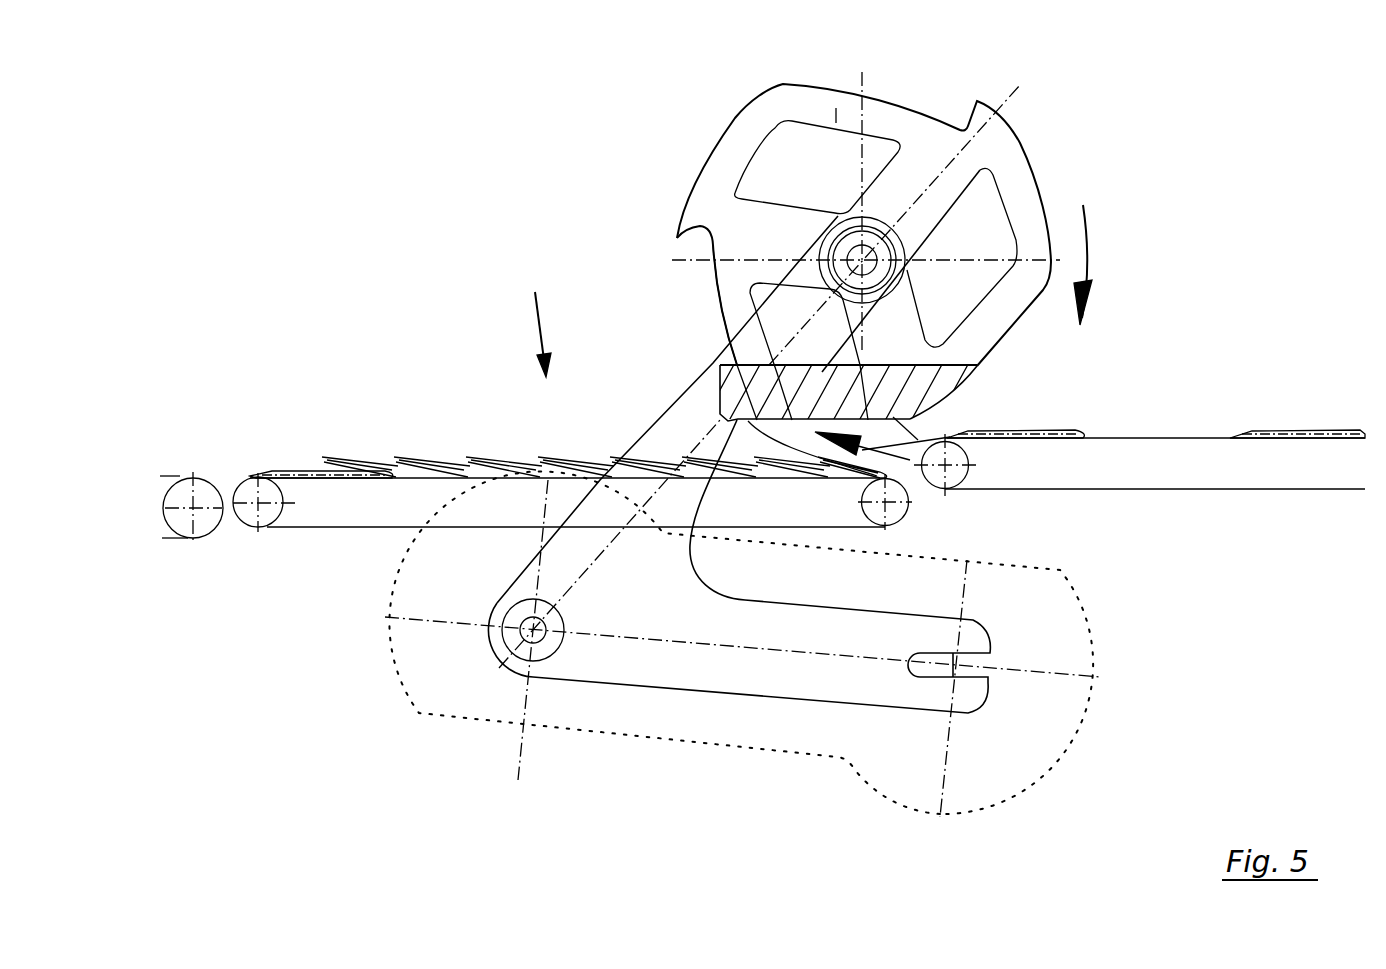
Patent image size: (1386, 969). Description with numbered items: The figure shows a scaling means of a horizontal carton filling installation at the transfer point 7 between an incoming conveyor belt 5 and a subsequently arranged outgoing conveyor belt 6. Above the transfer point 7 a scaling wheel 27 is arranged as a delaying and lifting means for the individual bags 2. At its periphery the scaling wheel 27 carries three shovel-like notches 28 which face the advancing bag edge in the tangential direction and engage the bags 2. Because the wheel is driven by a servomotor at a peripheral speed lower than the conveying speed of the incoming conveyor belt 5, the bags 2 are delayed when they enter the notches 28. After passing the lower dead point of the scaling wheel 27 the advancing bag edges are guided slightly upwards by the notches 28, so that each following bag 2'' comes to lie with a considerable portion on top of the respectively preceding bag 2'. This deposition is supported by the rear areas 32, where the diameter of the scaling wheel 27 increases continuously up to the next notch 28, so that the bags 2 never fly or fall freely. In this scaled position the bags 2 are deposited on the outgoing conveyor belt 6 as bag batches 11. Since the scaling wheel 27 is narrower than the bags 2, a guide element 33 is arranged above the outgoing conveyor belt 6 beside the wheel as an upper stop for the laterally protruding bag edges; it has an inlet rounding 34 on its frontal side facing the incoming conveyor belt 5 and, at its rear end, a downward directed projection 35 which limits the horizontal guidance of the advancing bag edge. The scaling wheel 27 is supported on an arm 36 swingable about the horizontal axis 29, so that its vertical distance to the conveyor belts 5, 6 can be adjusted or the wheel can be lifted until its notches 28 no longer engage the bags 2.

The bag 2 is at (1156, 391).
The preceding bag 2' is at (321, 400).
The following bag 2'' is at (604, 406).
The incoming conveyor belt 5 is at (1178, 490).
The outgoing conveyor belt 6 is at (337, 528).
The transfer point 7 is at (960, 530).
The bag batch 11 is at (538, 310).
The scaling wheel 27 is at (1022, 186).
The notch 28 is at (693, 238).
The horizontal axis 29 is at (530, 633).
The rear area 32 is at (725, 125).
The guide element 33 is at (715, 388).
The inlet rounding 34 is at (955, 397).
The downward directed projection 35 is at (732, 425).
The arm 36 is at (712, 370).